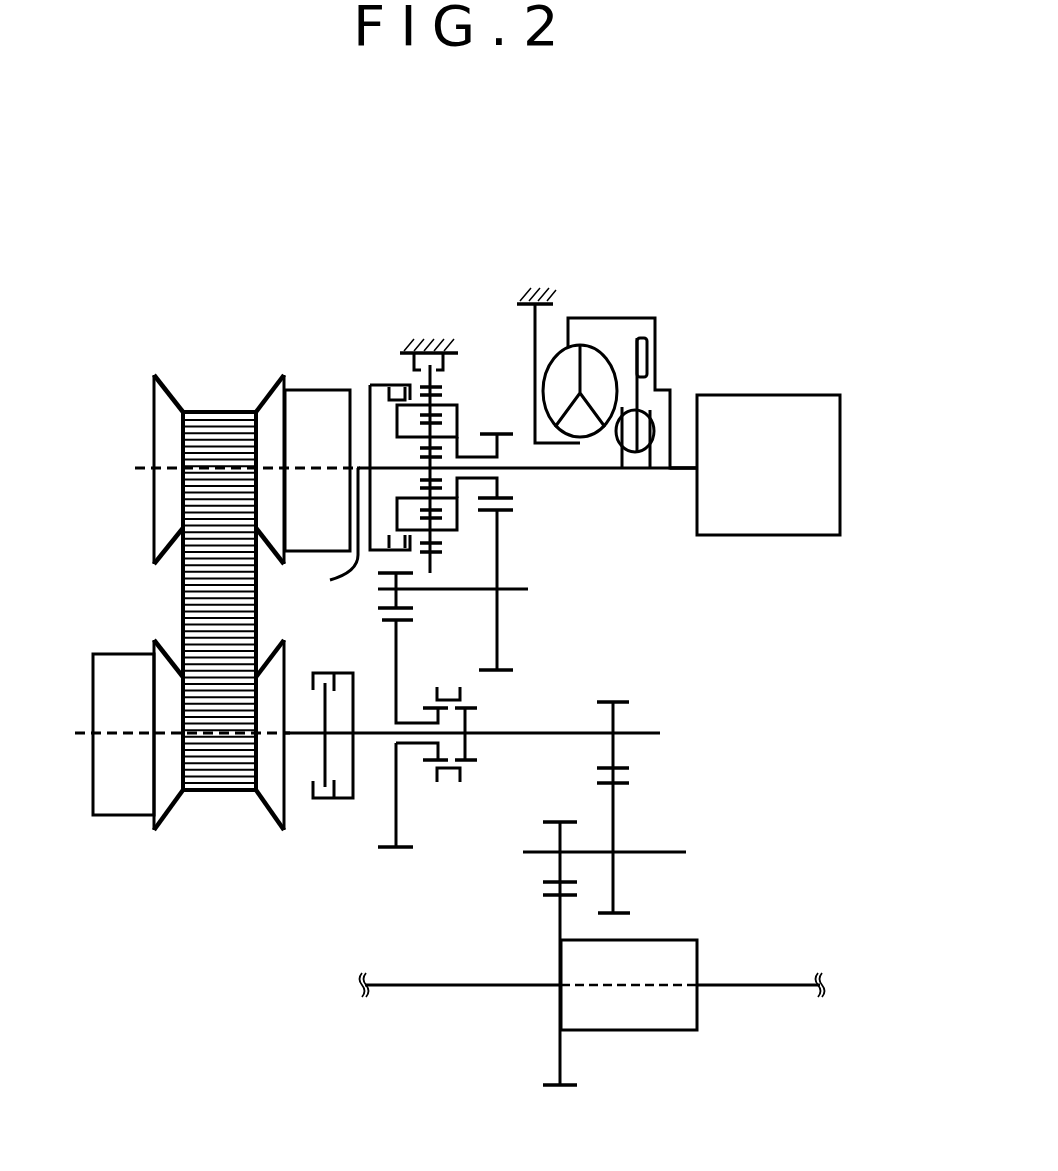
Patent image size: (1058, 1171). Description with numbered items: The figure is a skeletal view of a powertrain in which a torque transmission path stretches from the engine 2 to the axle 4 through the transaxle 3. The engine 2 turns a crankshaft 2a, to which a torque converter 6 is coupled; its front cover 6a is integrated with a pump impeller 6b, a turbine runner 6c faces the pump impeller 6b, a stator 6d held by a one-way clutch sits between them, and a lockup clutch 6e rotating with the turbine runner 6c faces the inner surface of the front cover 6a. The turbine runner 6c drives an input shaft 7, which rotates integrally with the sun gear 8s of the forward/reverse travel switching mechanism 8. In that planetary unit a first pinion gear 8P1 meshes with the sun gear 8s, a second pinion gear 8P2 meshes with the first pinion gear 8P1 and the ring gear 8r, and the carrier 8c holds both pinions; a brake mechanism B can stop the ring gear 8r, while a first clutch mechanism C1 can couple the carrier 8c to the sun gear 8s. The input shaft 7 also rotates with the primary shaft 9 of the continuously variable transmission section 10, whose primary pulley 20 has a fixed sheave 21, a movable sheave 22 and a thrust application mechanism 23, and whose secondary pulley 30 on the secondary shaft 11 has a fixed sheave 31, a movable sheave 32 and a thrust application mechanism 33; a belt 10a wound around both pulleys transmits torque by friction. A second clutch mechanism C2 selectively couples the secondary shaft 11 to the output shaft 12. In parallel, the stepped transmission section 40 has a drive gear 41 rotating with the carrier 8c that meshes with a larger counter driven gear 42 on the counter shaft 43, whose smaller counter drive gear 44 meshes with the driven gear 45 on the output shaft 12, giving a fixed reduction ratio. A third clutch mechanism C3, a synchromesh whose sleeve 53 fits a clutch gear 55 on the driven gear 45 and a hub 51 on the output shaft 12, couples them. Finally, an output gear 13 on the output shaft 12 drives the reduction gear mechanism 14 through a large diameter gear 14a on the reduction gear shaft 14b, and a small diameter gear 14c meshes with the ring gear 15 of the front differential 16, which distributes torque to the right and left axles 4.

The engine 2 is at (780, 393).
The crankshaft 2a is at (681, 478).
The transaxle 3 is at (406, 242).
The axle 4 is at (418, 990).
The torque converter 6 is at (630, 362).
The front cover 6a is at (672, 405).
The pump impeller 6b is at (556, 350).
The turbine runner 6c is at (600, 350).
The stator 6d is at (585, 424).
The lockup clutch 6e is at (655, 362).
The input shaft 7 is at (570, 476).
The forward/reverse travel switching mechanism 8 is at (451, 428).
The carrier 8c is at (393, 419).
The sun gear 8s is at (447, 480).
The ring gear 8r is at (436, 558).
The first pinion gear 8P1 is at (437, 500).
The second pinion gear 8P2 is at (440, 538).
The primary shaft 9 is at (329, 533).
The continuously variable transmission section 10 is at (221, 593).
The belt 10a is at (183, 598).
The secondary shaft 11 is at (297, 738).
The output shaft 12 is at (645, 740).
The output gear 13 is at (628, 762).
The reduction gear mechanism 14 is at (631, 871).
The large diameter gear 14a is at (622, 912).
The reduction gear shaft 14b is at (670, 852).
The small diameter gear 14c is at (548, 880).
The ring gear 15 is at (552, 1088).
The front differential 16 is at (668, 1032).
The primary pulley 20 is at (252, 431).
The fixed sheave 21 is at (168, 392).
The movable sheave 22 is at (264, 402).
The thrust application mechanism 23 is at (313, 386).
The secondary pulley 30 is at (188, 782).
The fixed sheave 31 is at (262, 804).
The movable sheave 32 is at (176, 806).
The thrust application mechanism 33 is at (130, 817).
The stepped transmission section 40 is at (471, 678).
The drive gear 41 is at (500, 430).
The counter driven gear 42 is at (507, 666).
The counter shaft 43 is at (462, 594).
The counter drive gear 44 is at (384, 600).
The driven gear 45 is at (404, 624).
The hub 51 is at (470, 712).
The sleeve 53 is at (465, 690).
The clutch gear 55 is at (432, 705).
The brake mechanism B is at (459, 370).
The first clutch mechanism C1 is at (397, 381).
The second clutch mechanism C2 is at (334, 800).
The third clutch mechanism C3 is at (451, 785).